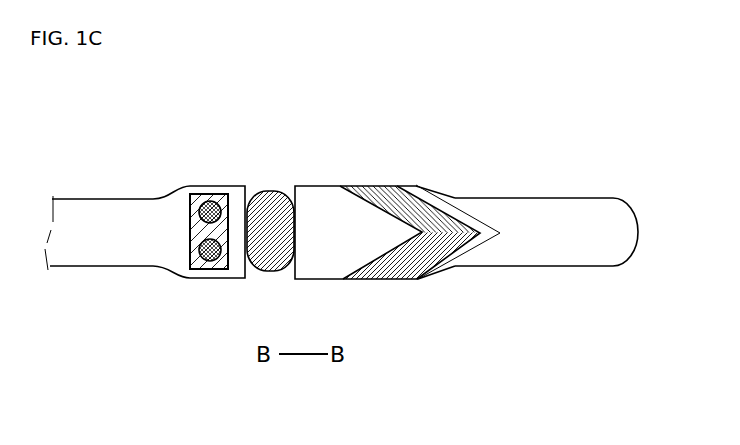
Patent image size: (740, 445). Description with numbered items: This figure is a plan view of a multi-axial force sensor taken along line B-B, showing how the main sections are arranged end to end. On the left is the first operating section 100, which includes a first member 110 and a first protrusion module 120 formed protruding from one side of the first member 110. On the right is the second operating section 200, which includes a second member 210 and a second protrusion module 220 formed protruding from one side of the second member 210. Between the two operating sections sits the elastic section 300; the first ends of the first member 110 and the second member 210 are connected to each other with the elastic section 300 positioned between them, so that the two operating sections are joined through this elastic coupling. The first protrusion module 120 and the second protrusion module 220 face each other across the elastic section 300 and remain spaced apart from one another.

The first operating section 100 is at (195, 123).
The first member 110 is at (108, 208).
The first protrusion module 120 is at (195, 187).
The second operating section 200 is at (487, 123).
The second member 210 is at (487, 200).
The second protrusion module 220 is at (397, 201).
The elastic section 300 is at (268, 205).